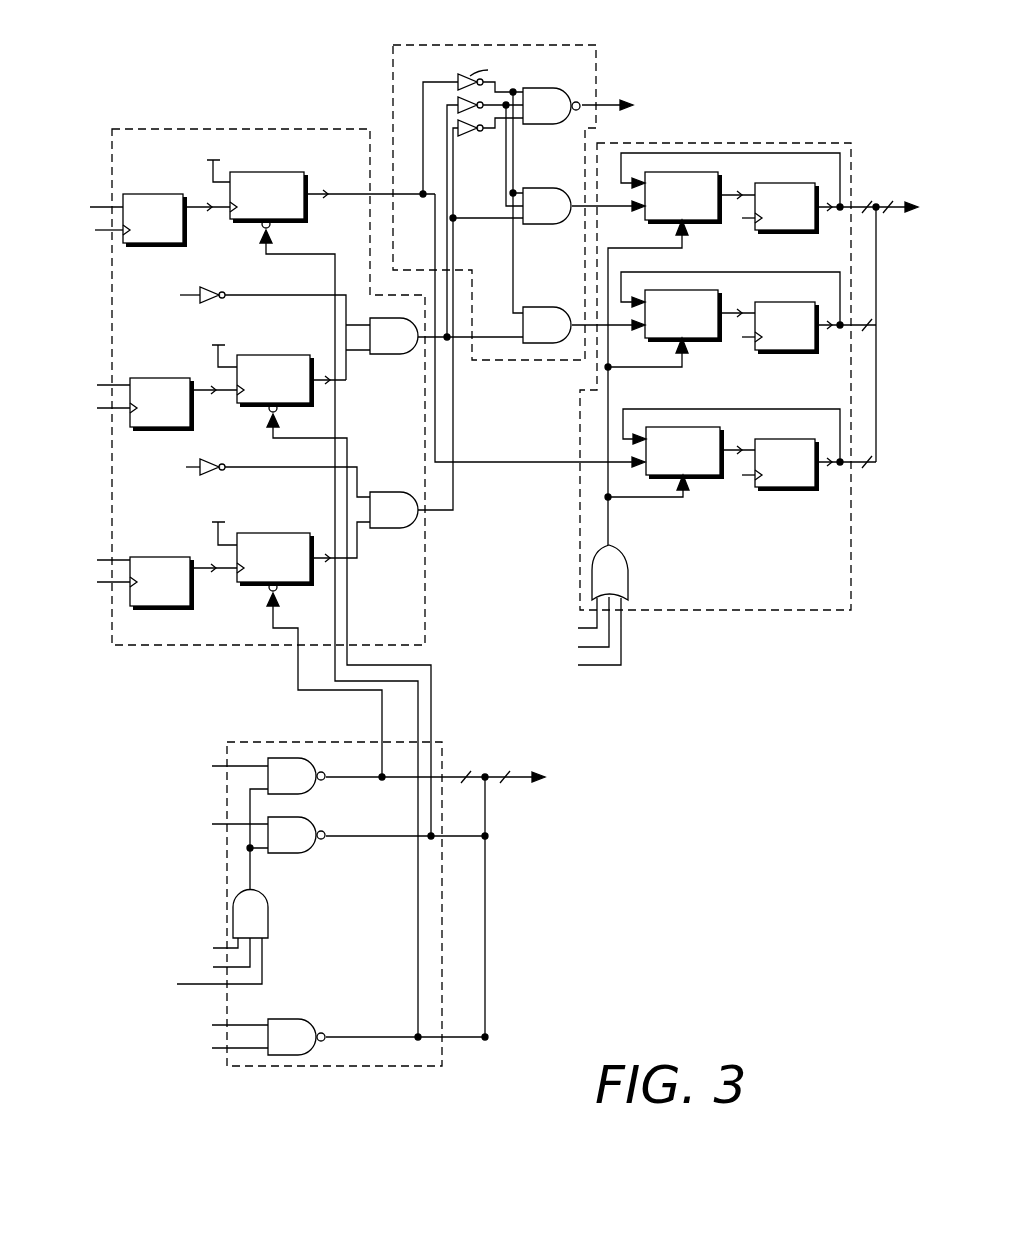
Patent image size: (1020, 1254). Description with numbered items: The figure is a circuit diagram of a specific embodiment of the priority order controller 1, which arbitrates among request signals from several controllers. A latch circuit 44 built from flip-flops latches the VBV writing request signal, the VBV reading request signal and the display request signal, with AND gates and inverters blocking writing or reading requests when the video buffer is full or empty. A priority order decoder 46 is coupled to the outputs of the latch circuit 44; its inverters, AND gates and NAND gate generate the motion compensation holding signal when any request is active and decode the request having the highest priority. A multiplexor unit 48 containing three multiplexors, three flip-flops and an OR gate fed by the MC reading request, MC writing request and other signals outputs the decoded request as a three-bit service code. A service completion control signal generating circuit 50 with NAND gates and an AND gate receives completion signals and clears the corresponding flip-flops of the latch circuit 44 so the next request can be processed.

The video signal control circuit 1 is at (768, 89).
The latch circuit 44 is at (242, 128).
The priority order decoder 46 is at (520, 362).
The multiplexor unit 48 is at (756, 611).
The service completion control signal generating circuit 50 is at (303, 741).